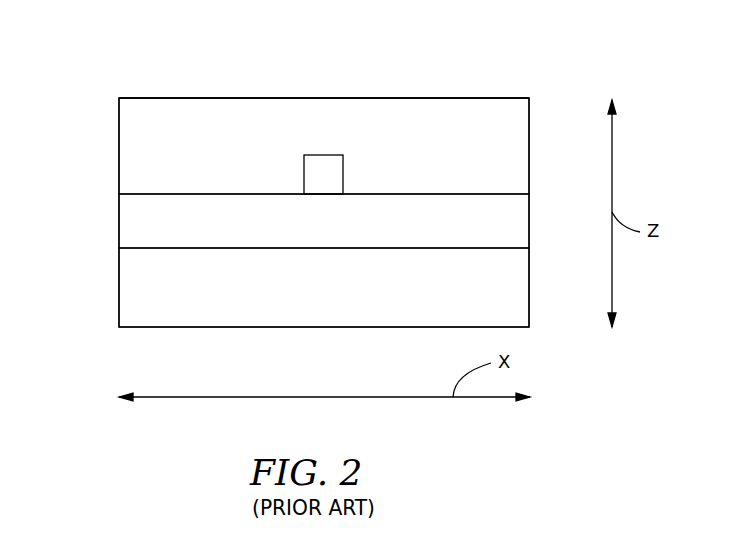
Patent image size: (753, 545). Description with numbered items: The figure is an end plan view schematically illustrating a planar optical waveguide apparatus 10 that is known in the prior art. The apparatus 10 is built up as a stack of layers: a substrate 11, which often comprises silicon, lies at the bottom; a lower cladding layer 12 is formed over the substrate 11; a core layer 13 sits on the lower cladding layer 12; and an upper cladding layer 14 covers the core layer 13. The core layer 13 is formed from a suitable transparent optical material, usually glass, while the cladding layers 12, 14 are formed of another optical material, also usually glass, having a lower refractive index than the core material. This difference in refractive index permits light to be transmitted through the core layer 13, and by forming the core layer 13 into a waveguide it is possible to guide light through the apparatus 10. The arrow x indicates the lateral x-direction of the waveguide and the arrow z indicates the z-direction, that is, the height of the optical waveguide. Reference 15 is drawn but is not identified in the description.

The planar optical waveguide apparatus 10 is at (123, 57).
The substrate 11 is at (132, 300).
The lower cladding layer 12 is at (132, 232).
The core layer 13 is at (320, 163).
The upper cladding layer 14 is at (132, 143).
The upper region 15 is at (492, 122).